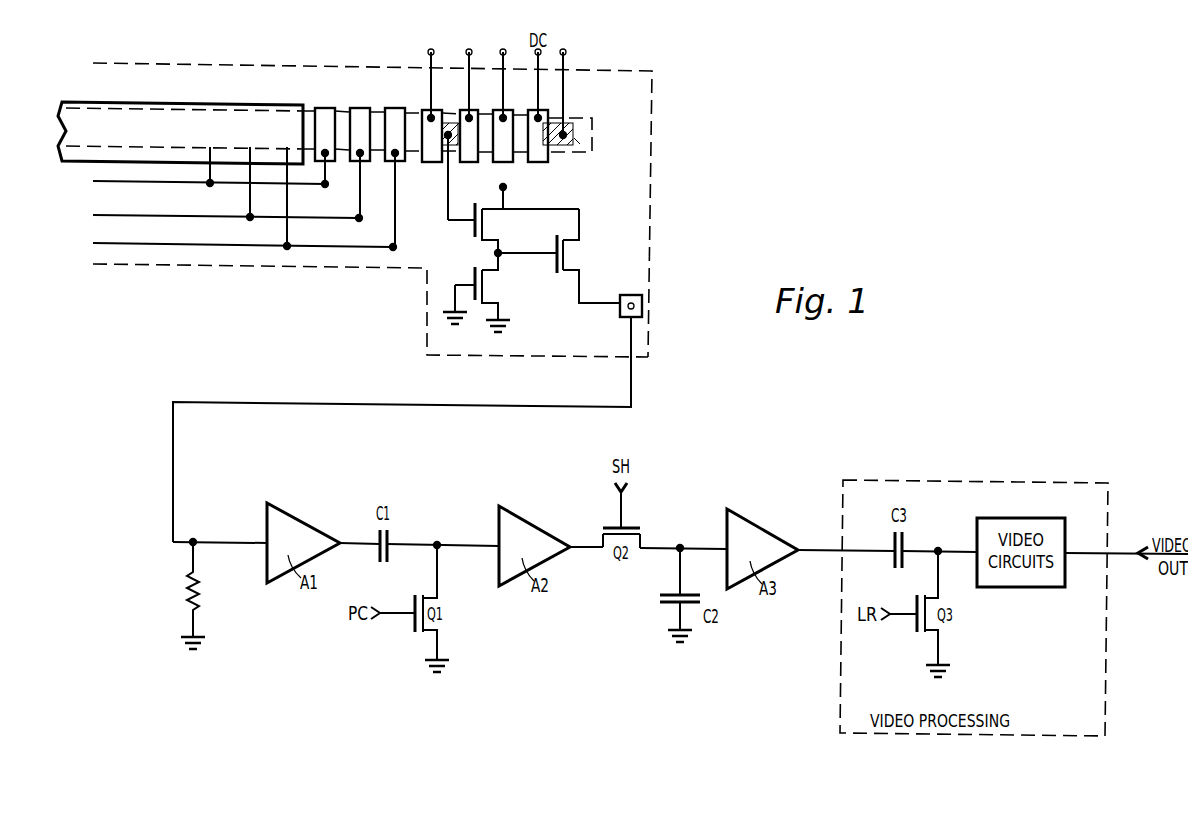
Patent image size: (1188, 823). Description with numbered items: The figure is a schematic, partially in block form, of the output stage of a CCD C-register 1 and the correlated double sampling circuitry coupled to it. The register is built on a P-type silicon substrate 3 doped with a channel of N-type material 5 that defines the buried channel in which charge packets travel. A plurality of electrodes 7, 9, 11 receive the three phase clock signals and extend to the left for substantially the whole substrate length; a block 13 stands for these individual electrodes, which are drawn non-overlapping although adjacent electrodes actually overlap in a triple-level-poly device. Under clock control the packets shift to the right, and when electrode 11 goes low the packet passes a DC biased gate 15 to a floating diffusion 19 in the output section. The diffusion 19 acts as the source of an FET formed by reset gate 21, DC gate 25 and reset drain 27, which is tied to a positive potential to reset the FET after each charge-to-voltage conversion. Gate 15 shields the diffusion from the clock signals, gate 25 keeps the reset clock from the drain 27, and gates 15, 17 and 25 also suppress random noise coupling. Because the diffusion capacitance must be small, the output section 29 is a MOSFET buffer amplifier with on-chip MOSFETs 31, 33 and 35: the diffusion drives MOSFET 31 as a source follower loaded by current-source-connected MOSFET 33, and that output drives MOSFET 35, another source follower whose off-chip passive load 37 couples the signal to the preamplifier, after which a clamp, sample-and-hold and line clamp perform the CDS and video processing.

The C-register 1 is at (633, 158).
The P-type silicon substrate 3 is at (641, 101).
The channel of N-type material 5 is at (571, 118).
The electrode 7 is at (332, 107).
The electrode 9 is at (366, 107).
The electrode 11 is at (403, 107).
The block 13 is at (249, 104).
The DC biased gate 15 is at (437, 163).
The gate 17 is at (467, 163).
The floating diffusion 19 is at (454, 122).
The reset gate 21 is at (500, 110).
The DC gate 25 is at (548, 162).
The reset drain 27 is at (574, 140).
The output section 29 is at (542, 266).
The MOSFET 31 is at (482, 241).
The MOSFET 33 is at (480, 317).
The MOSFET 35 is at (566, 256).
The passive load 37 is at (190, 594).